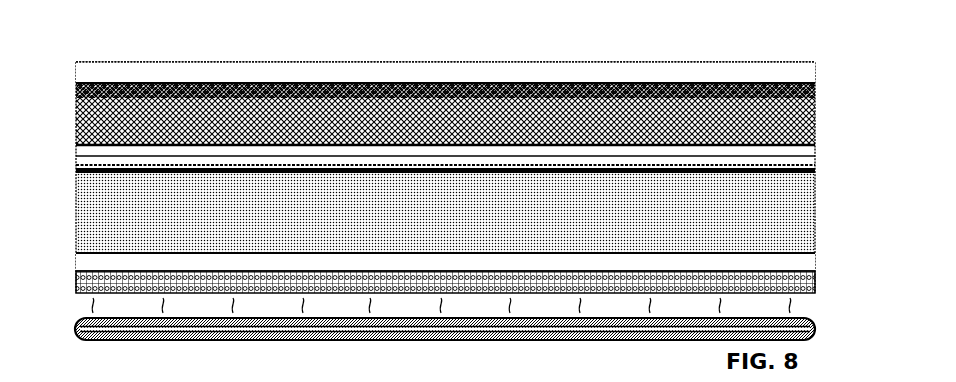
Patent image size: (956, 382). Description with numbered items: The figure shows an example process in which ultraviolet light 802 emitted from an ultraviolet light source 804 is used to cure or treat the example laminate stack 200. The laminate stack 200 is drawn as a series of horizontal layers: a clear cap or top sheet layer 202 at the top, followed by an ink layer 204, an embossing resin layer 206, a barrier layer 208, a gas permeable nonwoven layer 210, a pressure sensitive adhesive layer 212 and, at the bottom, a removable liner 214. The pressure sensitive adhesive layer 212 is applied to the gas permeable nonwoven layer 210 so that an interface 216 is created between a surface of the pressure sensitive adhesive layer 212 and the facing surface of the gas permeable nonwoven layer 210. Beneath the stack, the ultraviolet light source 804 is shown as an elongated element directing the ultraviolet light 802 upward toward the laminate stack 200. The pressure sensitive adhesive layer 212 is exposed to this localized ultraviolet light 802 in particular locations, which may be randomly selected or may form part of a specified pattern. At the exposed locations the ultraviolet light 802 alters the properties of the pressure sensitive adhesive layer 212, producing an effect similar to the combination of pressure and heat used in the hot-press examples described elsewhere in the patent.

The laminate stack 200 is at (161, 34).
The top sheet layer 202 is at (830, 61).
The ink layer 204 is at (808, 82).
The embossing resin layer 206 is at (808, 118).
The barrier layer 208 is at (808, 155).
The gas permeable nonwoven layer 210 is at (830, 212).
The pressure sensitive adhesive layer 212 is at (830, 249).
The removable liner 214 is at (808, 272).
The interface 216 is at (101, 240).
The ultraviolet light 802 is at (792, 300).
The ultraviolet light source 804 is at (808, 326).